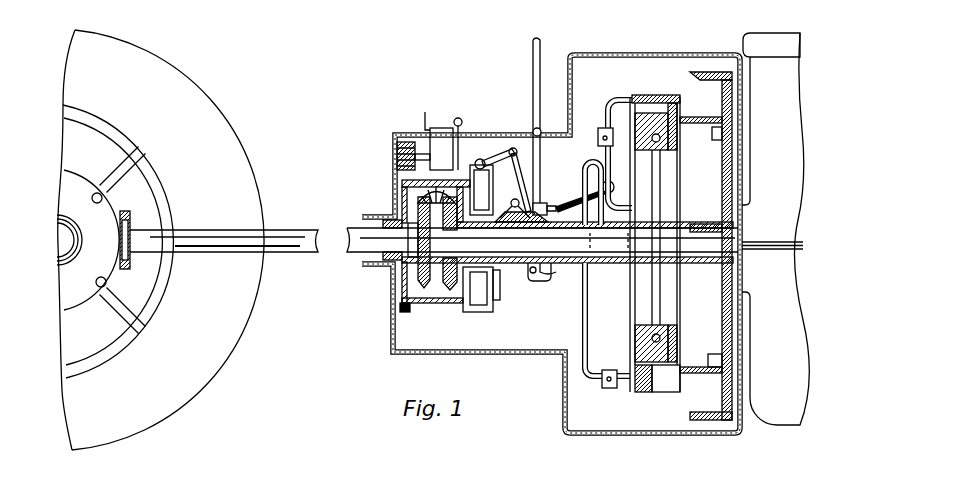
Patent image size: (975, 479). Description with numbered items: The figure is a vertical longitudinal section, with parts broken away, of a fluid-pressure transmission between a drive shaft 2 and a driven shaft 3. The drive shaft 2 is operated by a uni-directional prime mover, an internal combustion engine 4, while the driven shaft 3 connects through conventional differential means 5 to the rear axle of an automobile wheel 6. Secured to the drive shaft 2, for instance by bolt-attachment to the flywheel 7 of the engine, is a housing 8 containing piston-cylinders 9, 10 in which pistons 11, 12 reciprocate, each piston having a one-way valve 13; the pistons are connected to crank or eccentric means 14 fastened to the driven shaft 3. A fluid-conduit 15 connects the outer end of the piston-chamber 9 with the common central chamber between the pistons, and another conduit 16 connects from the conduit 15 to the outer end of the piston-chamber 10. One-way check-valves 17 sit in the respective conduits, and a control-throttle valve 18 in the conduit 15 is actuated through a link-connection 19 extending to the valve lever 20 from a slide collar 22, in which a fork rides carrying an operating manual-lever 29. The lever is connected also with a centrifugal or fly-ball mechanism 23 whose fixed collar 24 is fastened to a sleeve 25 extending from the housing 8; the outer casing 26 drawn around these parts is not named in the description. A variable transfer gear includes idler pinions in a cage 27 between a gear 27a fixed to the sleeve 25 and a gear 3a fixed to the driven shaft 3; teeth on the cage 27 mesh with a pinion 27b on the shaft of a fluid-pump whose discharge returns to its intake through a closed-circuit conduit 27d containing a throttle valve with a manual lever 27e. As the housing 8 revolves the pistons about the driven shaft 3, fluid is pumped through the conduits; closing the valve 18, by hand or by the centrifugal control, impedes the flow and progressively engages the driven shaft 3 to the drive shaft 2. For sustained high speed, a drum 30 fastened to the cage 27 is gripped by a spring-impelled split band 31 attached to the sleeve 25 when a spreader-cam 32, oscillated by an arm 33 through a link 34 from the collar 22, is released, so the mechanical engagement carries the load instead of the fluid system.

The drive shaft 2 is at (722, 252).
The driven shaft 3 is at (308, 234).
The gear 3a is at (417, 282).
The internal combustion engine 4 is at (775, 229).
The differential means 5 is at (93, 240).
The automobile wheel 6 is at (244, 335).
The flywheel 7 is at (720, 397).
The housing 8 is at (681, 174).
The piston-cylinder 9 is at (667, 95).
The piston-cylinder 10 is at (667, 393).
The piston 11 is at (647, 97).
The piston 12 is at (643, 393).
The one-way valve 13 is at (678, 113).
The crank or eccentric means 14 is at (661, 186).
The fluid-conduit 15 is at (605, 112).
The conduit 16 is at (588, 321).
The one-way check-valve 17 is at (598, 138).
The control-throttle valve 18 is at (602, 184).
The link-connection 19 is at (558, 204).
The valve lever 20 is at (544, 240).
The slide collar 22 is at (547, 282).
The centrifugal or fly-ball mechanism 23 is at (534, 284).
The fixed collar 24 is at (500, 300).
The sleeve 25 is at (610, 266).
The housing 26 is at (510, 355).
The cage 27 is at (405, 200).
The gear 27a is at (446, 292).
The pinion 27b is at (392, 142).
The closed-circuit conduit 27d is at (428, 112).
The valve lever 27e is at (458, 118).
The operating manual-lever 29 is at (533, 72).
The drum 30 is at (468, 308).
The split band 31 is at (495, 190).
The spreader-cam 32 is at (478, 159).
The arm 33 is at (483, 158).
The link 34 is at (514, 147).